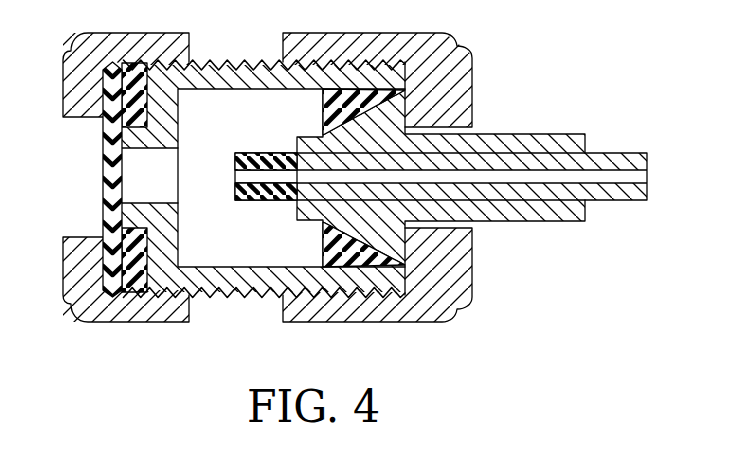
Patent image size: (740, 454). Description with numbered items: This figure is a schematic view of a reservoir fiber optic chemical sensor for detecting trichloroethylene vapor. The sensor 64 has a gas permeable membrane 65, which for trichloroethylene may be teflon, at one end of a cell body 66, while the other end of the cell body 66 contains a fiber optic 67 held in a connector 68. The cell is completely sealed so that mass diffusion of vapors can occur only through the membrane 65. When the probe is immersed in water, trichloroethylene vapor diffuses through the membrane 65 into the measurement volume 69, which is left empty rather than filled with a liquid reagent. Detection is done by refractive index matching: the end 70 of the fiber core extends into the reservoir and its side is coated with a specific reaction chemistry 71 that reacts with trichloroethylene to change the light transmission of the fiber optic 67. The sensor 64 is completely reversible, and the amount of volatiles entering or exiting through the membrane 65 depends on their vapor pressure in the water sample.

The sensor 64 is at (496, 33).
The gas permeable membrane 65 is at (105, 190).
The cell body 66 is at (250, 300).
The fiber optic 67 is at (618, 152).
The connector 68 is at (489, 116).
The measurement volume 69 is at (268, 98).
The end of the fiber 70 is at (235, 168).
The reaction chemistry 71 is at (268, 201).